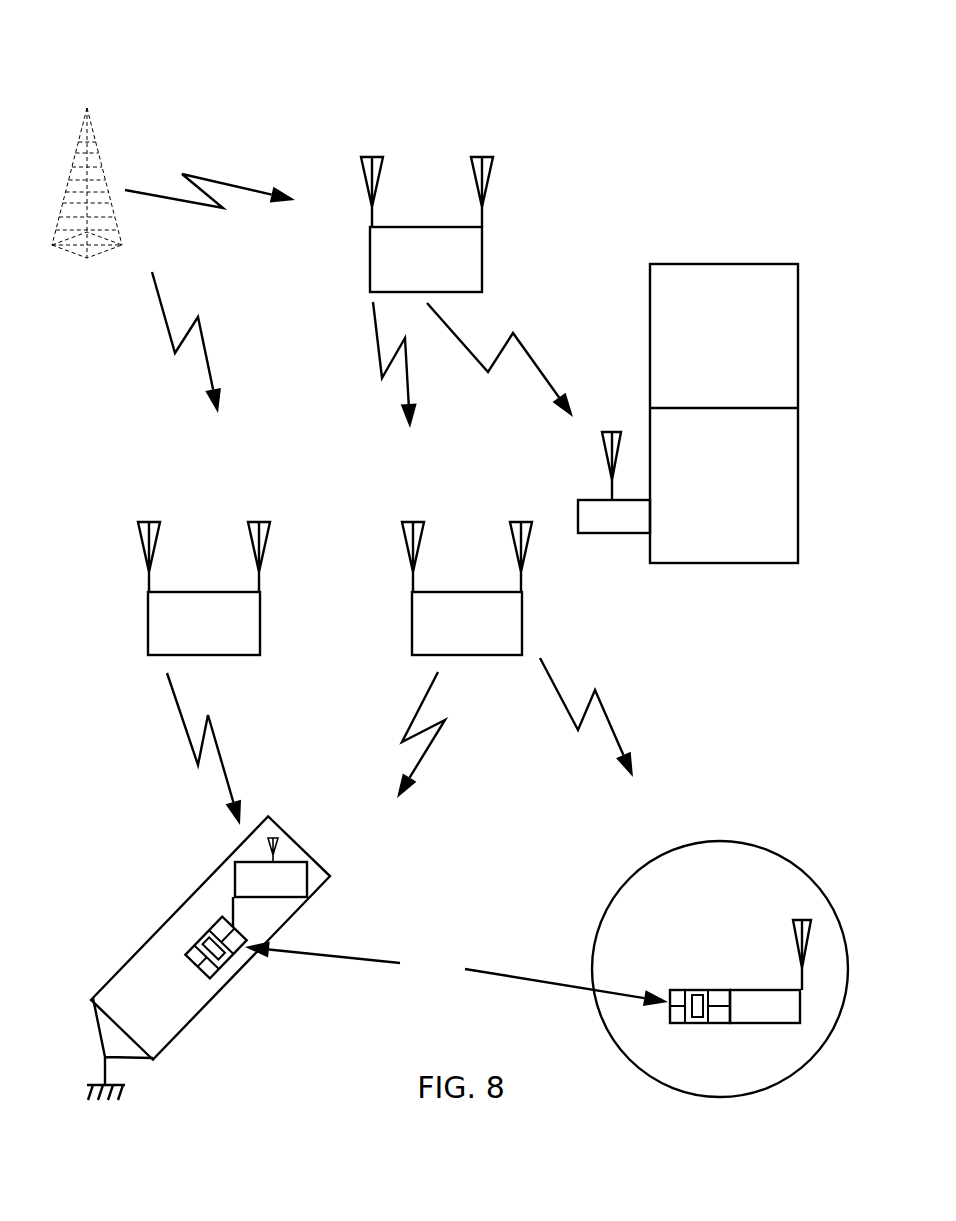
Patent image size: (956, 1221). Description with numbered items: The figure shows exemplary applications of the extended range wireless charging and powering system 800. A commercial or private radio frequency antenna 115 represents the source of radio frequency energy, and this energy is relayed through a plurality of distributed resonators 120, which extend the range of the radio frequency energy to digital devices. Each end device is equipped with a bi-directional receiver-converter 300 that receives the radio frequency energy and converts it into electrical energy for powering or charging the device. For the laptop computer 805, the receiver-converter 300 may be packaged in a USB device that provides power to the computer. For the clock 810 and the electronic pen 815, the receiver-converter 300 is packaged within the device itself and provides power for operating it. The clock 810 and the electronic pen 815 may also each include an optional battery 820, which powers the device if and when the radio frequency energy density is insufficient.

The wireless communication system 800 is at (108, 62).
The commercial or private radio frequency antenna 115 is at (87, 215).
The distributed resonators 120 is at (335, 406).
The laptop computer 805 is at (724, 413).
The bi-directional receiver-converter 300 is at (523, 727).
The clock 810 is at (720, 969).
The electronic pen 815 is at (208, 958).
The battery 820 is at (456, 974).